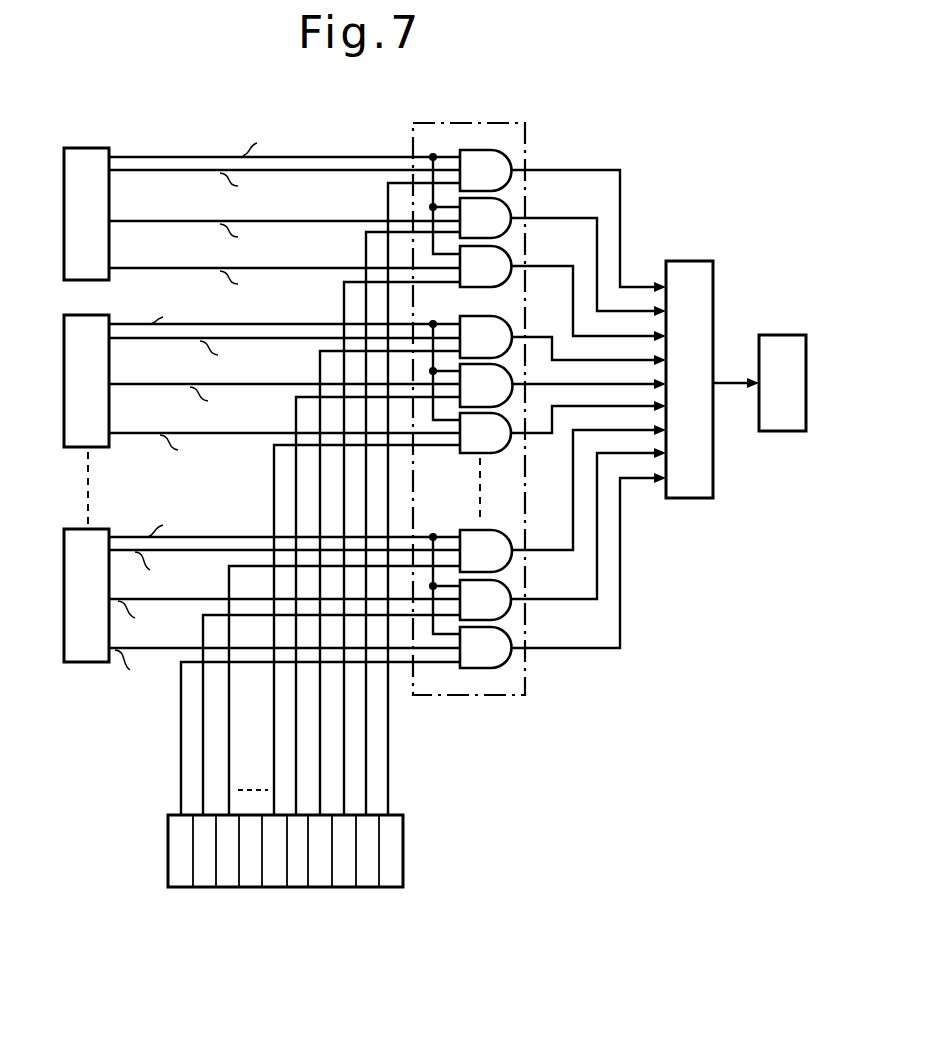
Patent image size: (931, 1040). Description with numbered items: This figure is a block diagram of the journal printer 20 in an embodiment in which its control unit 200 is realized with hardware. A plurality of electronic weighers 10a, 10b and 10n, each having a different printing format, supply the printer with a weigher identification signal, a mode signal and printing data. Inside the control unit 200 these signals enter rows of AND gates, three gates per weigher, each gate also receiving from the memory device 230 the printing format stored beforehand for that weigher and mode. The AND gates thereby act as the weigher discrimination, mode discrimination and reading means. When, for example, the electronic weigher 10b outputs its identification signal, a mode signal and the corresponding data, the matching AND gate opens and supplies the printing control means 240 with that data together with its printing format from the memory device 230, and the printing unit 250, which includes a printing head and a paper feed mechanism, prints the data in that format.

The journal printer 20 is at (663, 181).
The electronic weigher 10a is at (66, 200).
The electronic weigher 10b is at (66, 380).
The electronic weigher 10n is at (80, 656).
The control unit 200 is at (527, 143).
The memory device 230 is at (403, 860).
The printing control means 240 is at (693, 262).
The printing unit 250 is at (785, 335).